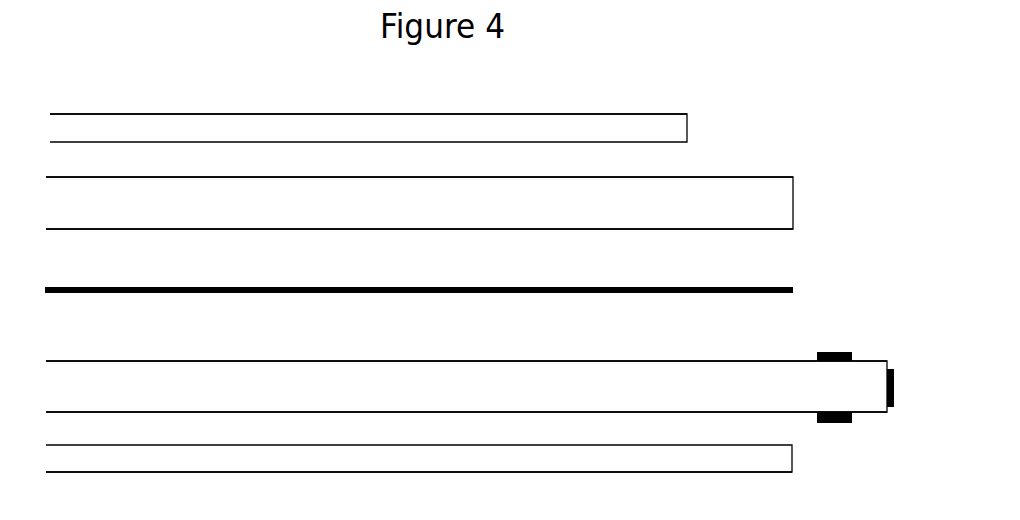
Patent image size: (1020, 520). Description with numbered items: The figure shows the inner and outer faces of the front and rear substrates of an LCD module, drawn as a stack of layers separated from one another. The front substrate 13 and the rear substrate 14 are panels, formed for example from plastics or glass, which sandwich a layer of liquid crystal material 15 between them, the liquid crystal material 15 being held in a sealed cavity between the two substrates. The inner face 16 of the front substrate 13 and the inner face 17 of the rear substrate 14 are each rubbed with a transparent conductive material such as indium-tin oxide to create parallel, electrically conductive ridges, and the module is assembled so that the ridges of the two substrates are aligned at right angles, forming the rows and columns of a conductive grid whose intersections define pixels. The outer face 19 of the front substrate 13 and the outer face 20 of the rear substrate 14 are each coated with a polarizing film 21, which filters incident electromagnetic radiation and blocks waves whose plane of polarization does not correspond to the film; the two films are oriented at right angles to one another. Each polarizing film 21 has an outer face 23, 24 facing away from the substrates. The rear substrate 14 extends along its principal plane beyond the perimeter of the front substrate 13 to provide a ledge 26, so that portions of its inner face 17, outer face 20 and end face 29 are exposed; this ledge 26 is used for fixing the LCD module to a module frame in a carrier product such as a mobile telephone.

The front substrate 13 is at (419, 203).
The rear substrate 14 is at (466, 386).
The layer of liquid crystal material 15 is at (407, 291).
The inner face of front substrate 16 is at (419, 240).
The inner face of rear substrate 17 is at (466, 351).
The outer face of front substrate 19 is at (419, 166).
The outer face of rear substrate 20 is at (466, 424).
The polarizing film 21 is at (419, 293).
The outer face of polarizing film 23 is at (368, 107).
The outer face of polarizing film 24 is at (419, 481).
The ledge 26 is at (888, 425).
The end face 29 is at (906, 388).